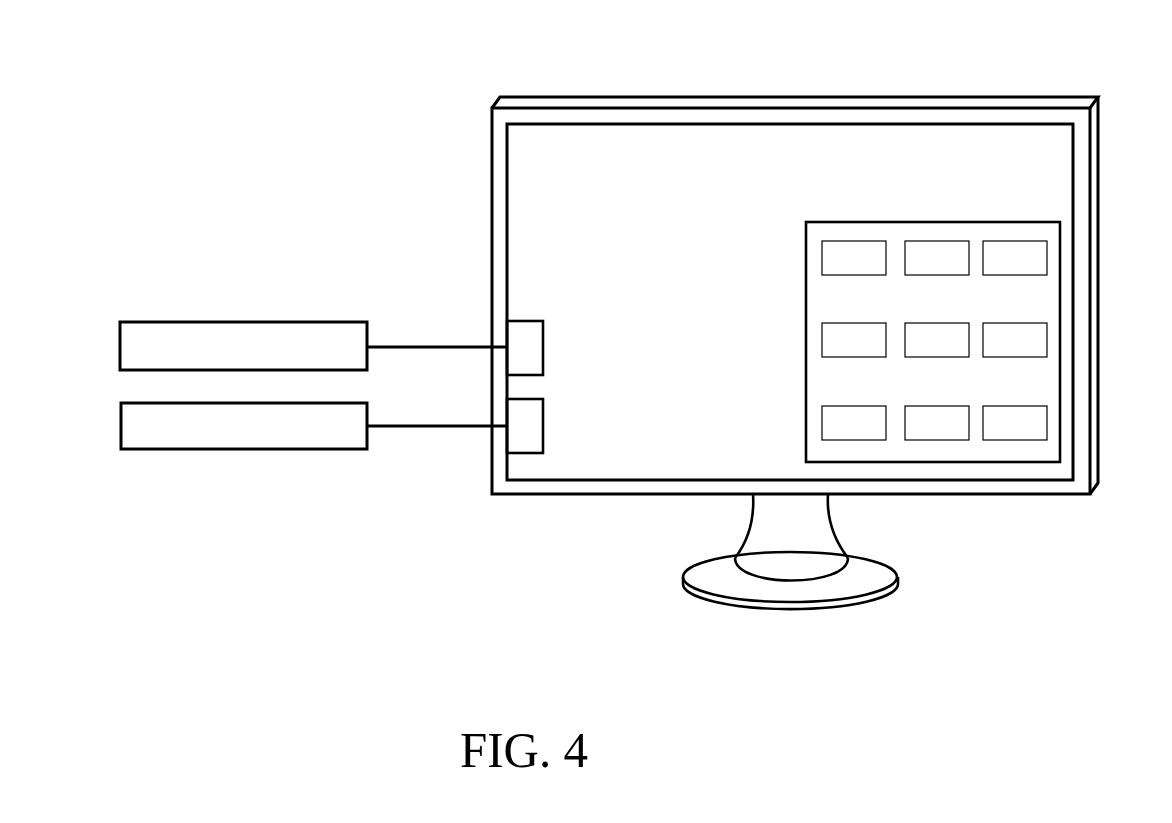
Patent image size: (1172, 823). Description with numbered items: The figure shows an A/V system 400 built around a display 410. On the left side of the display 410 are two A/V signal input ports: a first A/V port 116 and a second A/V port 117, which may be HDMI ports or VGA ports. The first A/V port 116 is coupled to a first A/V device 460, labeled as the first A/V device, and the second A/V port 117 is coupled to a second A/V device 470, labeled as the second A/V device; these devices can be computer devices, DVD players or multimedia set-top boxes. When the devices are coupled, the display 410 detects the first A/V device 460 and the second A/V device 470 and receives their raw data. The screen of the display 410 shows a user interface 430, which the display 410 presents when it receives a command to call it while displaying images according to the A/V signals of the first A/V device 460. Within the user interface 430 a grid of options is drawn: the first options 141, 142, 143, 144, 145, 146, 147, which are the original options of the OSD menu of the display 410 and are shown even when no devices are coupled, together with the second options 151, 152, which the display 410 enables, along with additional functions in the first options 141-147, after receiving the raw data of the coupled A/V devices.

The A/V system 400 is at (192, 83).
The display 410 is at (996, 98).
The user interface 430 is at (1060, 262).
The first A/V device 460 is at (178, 322).
The second A/V device 470 is at (172, 449).
The first A/V port 116 is at (517, 340).
The second A/V port 117 is at (528, 445).
The first option 141 is at (872, 437).
The first option 142 is at (955, 272).
The first option 143 is at (955, 354).
The first option 144 is at (955, 437).
The first option 145 is at (1033, 272).
The first option 146 is at (1033, 354).
The first option 147 is at (1033, 437).
The second option 151 is at (872, 272).
The second option 152 is at (872, 354).